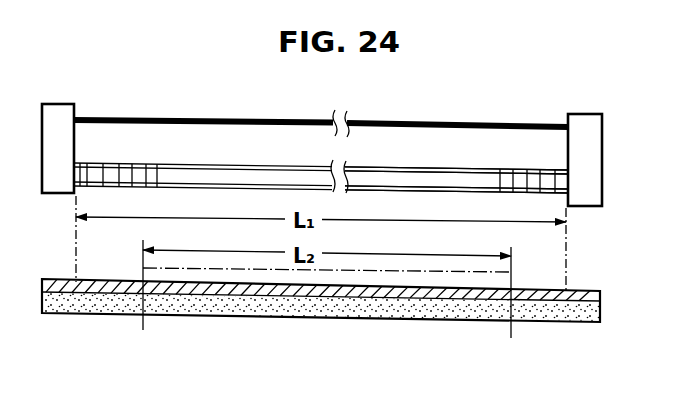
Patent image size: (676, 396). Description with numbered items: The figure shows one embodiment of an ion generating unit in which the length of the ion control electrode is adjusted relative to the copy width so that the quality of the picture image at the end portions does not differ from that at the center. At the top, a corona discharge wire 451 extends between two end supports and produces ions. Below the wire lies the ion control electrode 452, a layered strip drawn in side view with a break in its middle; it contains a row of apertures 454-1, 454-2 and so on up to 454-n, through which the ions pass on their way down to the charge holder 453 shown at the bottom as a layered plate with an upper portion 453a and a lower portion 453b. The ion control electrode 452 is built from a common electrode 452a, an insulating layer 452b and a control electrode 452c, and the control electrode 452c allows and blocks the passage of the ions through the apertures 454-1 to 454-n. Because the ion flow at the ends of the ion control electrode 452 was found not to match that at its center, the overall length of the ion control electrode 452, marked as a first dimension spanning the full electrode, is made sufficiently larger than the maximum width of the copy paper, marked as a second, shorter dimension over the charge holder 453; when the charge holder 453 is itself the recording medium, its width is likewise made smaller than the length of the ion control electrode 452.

The corona discharge wire 451 is at (222, 117).
The ion control electrode 452 is at (430, 168).
The common electrode 452a is at (369, 169).
The insulating layer 452b is at (385, 178).
The control electrode 452c is at (366, 190).
The charge holder 453 is at (340, 314).
The upper layer of base plate 453a is at (585, 297).
The lower layer of base plate 453b is at (590, 316).
The aperture 454-1 is at (97, 170).
The aperture 454-2 is at (125, 170).
The aperture 454-n is at (563, 182).